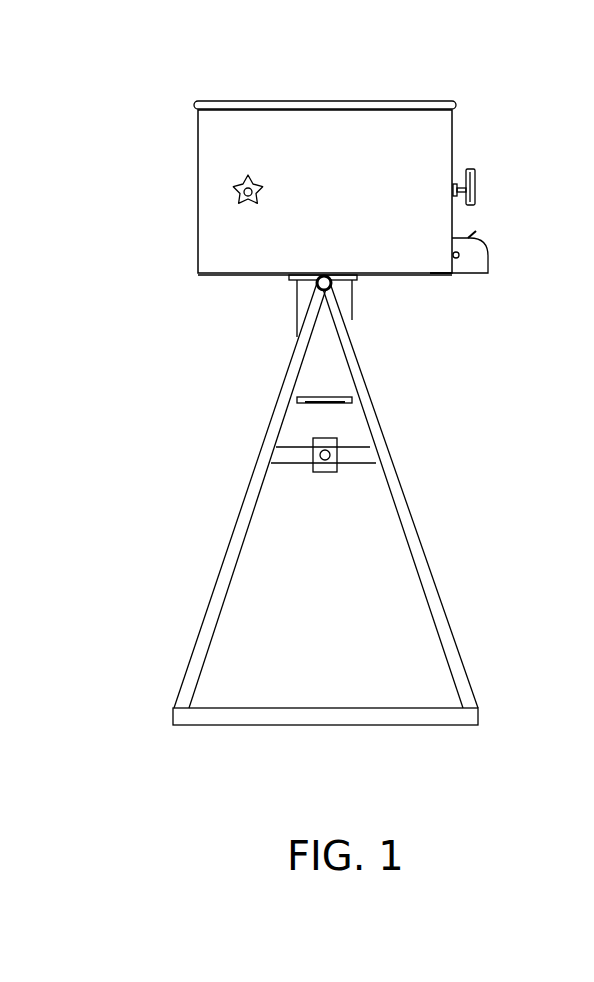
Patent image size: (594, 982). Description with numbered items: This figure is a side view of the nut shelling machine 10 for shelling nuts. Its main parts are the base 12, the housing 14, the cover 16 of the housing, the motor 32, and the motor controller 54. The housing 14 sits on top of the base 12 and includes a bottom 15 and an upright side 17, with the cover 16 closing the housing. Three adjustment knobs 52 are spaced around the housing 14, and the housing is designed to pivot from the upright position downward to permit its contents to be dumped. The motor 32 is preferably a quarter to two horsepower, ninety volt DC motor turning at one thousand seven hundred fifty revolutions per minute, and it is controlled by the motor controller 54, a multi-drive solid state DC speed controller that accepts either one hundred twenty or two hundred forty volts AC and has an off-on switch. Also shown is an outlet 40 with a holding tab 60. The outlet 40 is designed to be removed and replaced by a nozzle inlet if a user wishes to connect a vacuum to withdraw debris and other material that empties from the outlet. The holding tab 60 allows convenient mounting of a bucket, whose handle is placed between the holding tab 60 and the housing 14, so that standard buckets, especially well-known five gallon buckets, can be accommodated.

The nut shelling machine 10 is at (480, 96).
The base 12 is at (430, 567).
The housing 14 is at (248, 267).
The bottom 15 is at (432, 273).
The cover 16 is at (447, 102).
The upright side 17 is at (198, 210).
The motor 32 is at (352, 318).
The outlet 40 is at (488, 256).
The adjustment knob 52 is at (267, 183).
The motor controller 54 is at (322, 472).
The holding tab 60 is at (470, 233).